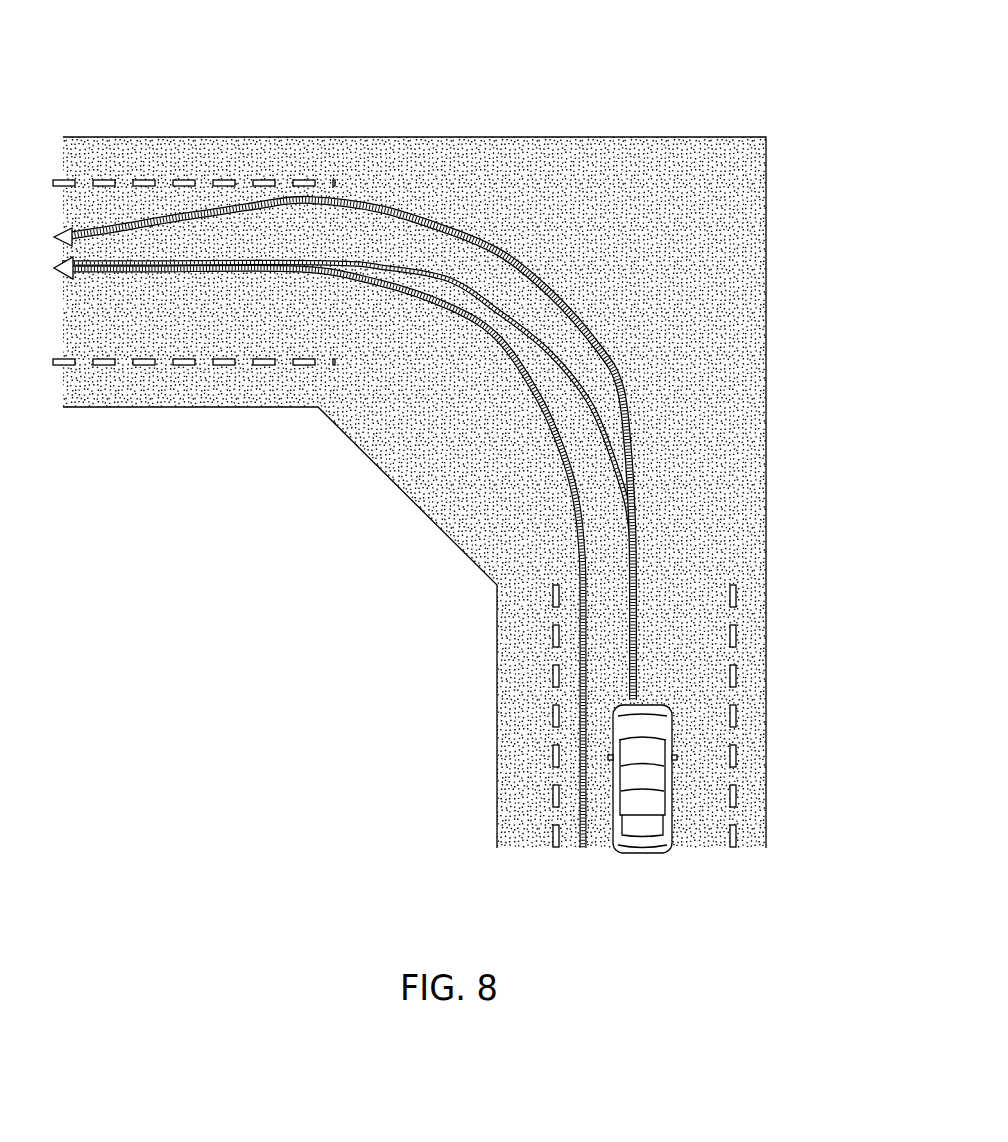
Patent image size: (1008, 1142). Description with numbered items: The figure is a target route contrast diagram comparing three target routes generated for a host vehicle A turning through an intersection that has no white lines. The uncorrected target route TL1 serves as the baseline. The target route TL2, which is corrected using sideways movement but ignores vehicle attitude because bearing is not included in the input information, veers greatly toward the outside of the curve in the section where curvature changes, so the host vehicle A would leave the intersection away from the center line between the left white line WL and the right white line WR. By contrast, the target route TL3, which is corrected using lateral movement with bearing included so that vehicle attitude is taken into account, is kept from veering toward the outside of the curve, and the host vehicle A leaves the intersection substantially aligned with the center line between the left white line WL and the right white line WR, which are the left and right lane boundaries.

The target route (uncorrected) TL1 is at (570, 549).
The target route (corrected, ignoring vehicle attitude) TL2 is at (257, 190).
The target route (corrected, accounting for vehicle attitude) TL3 is at (510, 303).
The left white line WL is at (540, 757).
The right white line WR is at (750, 755).
The host vehicle A is at (597, 815).